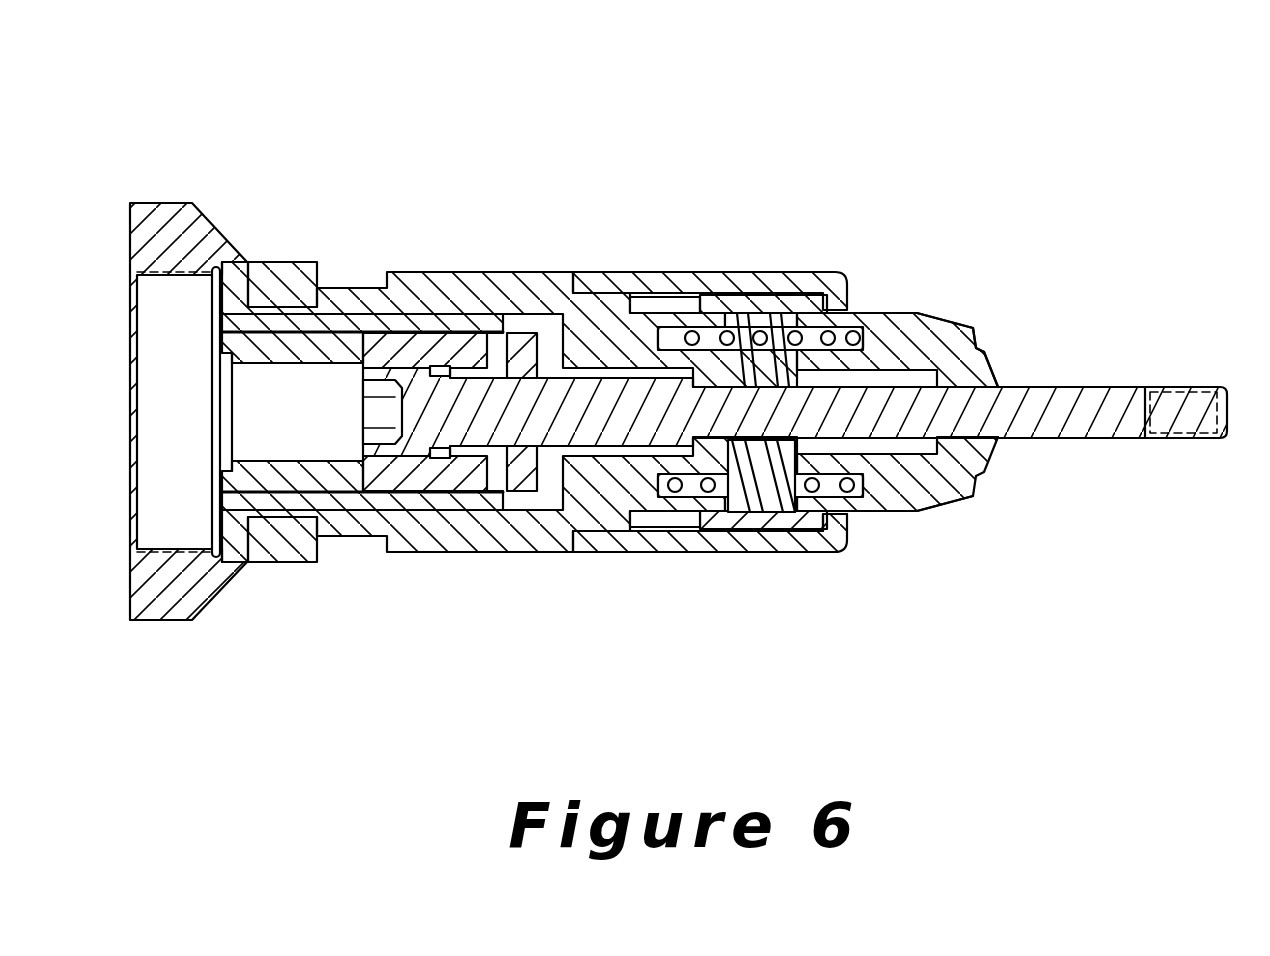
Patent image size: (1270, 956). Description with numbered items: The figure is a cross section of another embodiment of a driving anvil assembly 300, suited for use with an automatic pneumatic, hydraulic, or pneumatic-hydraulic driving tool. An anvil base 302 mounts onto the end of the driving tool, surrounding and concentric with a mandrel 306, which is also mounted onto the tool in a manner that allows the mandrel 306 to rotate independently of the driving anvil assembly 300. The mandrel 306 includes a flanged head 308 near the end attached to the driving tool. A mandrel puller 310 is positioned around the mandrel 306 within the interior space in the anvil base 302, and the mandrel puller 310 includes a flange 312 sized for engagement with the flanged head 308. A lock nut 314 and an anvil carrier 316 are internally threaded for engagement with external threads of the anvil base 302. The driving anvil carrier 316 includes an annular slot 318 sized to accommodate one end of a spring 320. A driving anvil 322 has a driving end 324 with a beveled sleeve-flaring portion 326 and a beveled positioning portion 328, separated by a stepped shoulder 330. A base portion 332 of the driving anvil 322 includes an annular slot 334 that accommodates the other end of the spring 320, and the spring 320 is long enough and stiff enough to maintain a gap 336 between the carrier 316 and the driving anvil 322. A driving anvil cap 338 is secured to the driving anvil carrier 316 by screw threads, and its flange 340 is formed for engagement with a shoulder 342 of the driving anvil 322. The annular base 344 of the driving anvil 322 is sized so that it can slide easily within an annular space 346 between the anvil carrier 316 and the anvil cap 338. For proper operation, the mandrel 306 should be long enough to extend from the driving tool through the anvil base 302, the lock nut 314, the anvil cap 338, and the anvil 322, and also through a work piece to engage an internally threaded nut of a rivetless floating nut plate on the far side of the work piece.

The driving anvil assembly 300 is at (570, 88).
The anvil base 302 is at (198, 203).
The mandrel 306 is at (1063, 422).
The flanged head 308 is at (407, 457).
The mandrel puller 310 is at (355, 480).
The flange 312 is at (458, 460).
The lock nut 314 is at (298, 260).
The anvil carrier 316 is at (482, 272).
The annular slot 318 is at (673, 337).
The spring 320 is at (742, 487).
The driving anvil 322 is at (907, 313).
The driving end 324 is at (955, 323).
The beveled sleeve-flaring portion 326 is at (997, 383).
The beveled positioning portion 328 is at (985, 350).
The stepped shoulder 330 is at (985, 352).
The base portion 332 is at (790, 290).
The annular slot 334 is at (845, 516).
The gap 336 is at (760, 503).
The driving anvil cap 338 is at (737, 290).
The flange 340 is at (830, 308).
The shoulder 342 is at (820, 505).
The annular base 344 is at (722, 522).
The annular space 346 is at (660, 520).